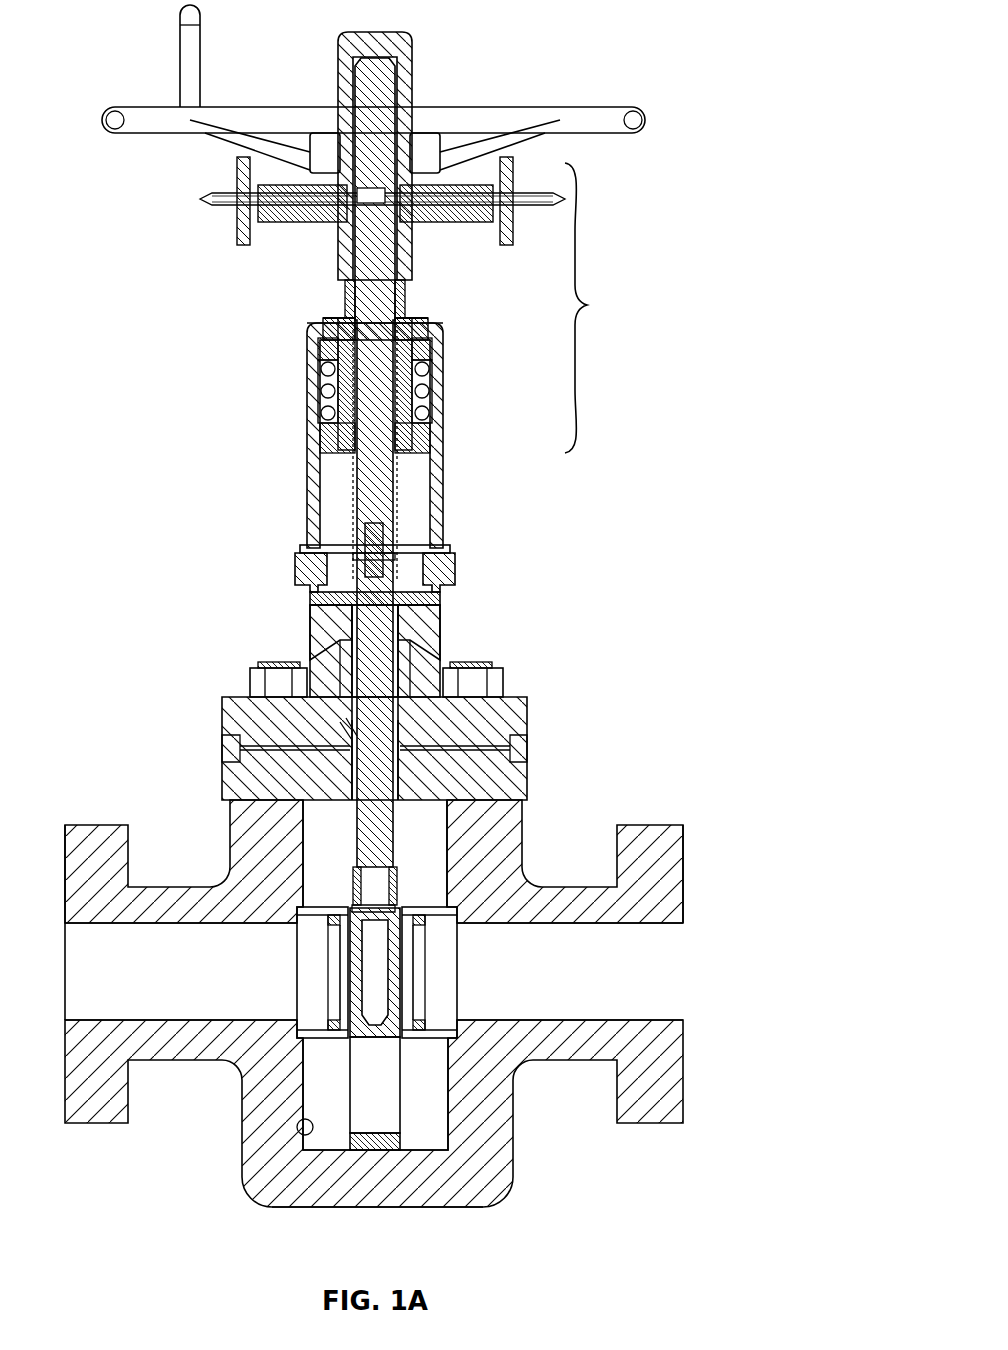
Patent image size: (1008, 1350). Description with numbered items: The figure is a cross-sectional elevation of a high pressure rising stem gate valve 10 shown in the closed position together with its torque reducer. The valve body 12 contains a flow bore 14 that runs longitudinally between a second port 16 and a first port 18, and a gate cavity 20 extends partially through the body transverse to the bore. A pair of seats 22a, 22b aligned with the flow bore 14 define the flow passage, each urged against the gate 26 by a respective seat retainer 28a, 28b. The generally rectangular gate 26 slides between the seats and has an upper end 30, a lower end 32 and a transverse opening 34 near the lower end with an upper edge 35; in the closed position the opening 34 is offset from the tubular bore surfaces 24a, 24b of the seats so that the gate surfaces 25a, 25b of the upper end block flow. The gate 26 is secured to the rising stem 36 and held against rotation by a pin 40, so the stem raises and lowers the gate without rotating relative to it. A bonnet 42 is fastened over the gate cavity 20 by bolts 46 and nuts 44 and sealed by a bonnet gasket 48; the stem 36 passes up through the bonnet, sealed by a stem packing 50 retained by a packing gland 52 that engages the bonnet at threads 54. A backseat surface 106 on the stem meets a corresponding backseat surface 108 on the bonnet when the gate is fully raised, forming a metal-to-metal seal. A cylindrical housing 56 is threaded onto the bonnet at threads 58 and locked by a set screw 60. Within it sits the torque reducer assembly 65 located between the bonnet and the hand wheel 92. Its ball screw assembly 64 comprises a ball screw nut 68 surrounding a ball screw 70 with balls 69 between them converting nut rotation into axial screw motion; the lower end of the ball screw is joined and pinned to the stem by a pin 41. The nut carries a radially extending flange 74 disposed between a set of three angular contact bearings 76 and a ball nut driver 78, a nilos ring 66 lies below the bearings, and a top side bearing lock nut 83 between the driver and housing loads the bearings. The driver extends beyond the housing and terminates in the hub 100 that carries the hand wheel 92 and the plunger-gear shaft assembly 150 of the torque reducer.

The rising stem gate valve 10 is at (681, 49).
The valve body 12 is at (530, 829).
The flow bore 14 is at (136, 979).
The second port 16 is at (82, 1032).
The first port 18 is at (675, 932).
The gate cavity 20 is at (298, 1128).
The seat 22a is at (332, 925).
The seat 22b is at (420, 925).
The bore surface 24a is at (332, 1025).
The bore surface 24b is at (420, 1025).
The gate surface 25a is at (342, 975).
The gate surface 25b is at (416, 962).
The gate 26 is at (393, 1150).
The seat retainer 28a is at (305, 915).
The seat retainer 28b is at (440, 918).
The upper end 30 is at (376, 935).
The lower end 32 is at (448, 1062).
The transverse opening 34 is at (340, 1153).
The upper edge 35 is at (390, 1042).
The rising stem 36 is at (352, 750).
The pin 40 is at (352, 868).
The pin 41 is at (397, 555).
The bonnet 42 is at (512, 770).
The nut 44 is at (250, 690).
The bolt 46 is at (280, 663).
The bonnet gasket 48 is at (508, 748).
The stem packing 50 is at (420, 660).
The packing gland 52 is at (300, 560).
The threads 54 is at (412, 640).
The housing 56 is at (447, 466).
The threads 58 is at (336, 610).
The set screw 60 is at (345, 655).
The ball screw assembly 64 is at (267, 320).
The torque reducer assembly 65 is at (595, 308).
The nilos ring 66 is at (322, 432).
The ball screw nut 68 is at (430, 386).
The balls 69 is at (327, 447).
The ball screw 70 is at (370, 465).
The radially extending flange 74 is at (422, 342).
The angular contact bearings 76 is at (320, 386).
The ball nut driver 78 is at (410, 296).
The top side bearing lock nut 83 is at (437, 327).
The hand wheel 92 is at (482, 110).
The hub 100 is at (338, 257).
The backseat surface 106 is at (420, 845).
The backseat surface 108 is at (450, 740).
The plunger-gear shaft assembly 150 is at (172, 203).